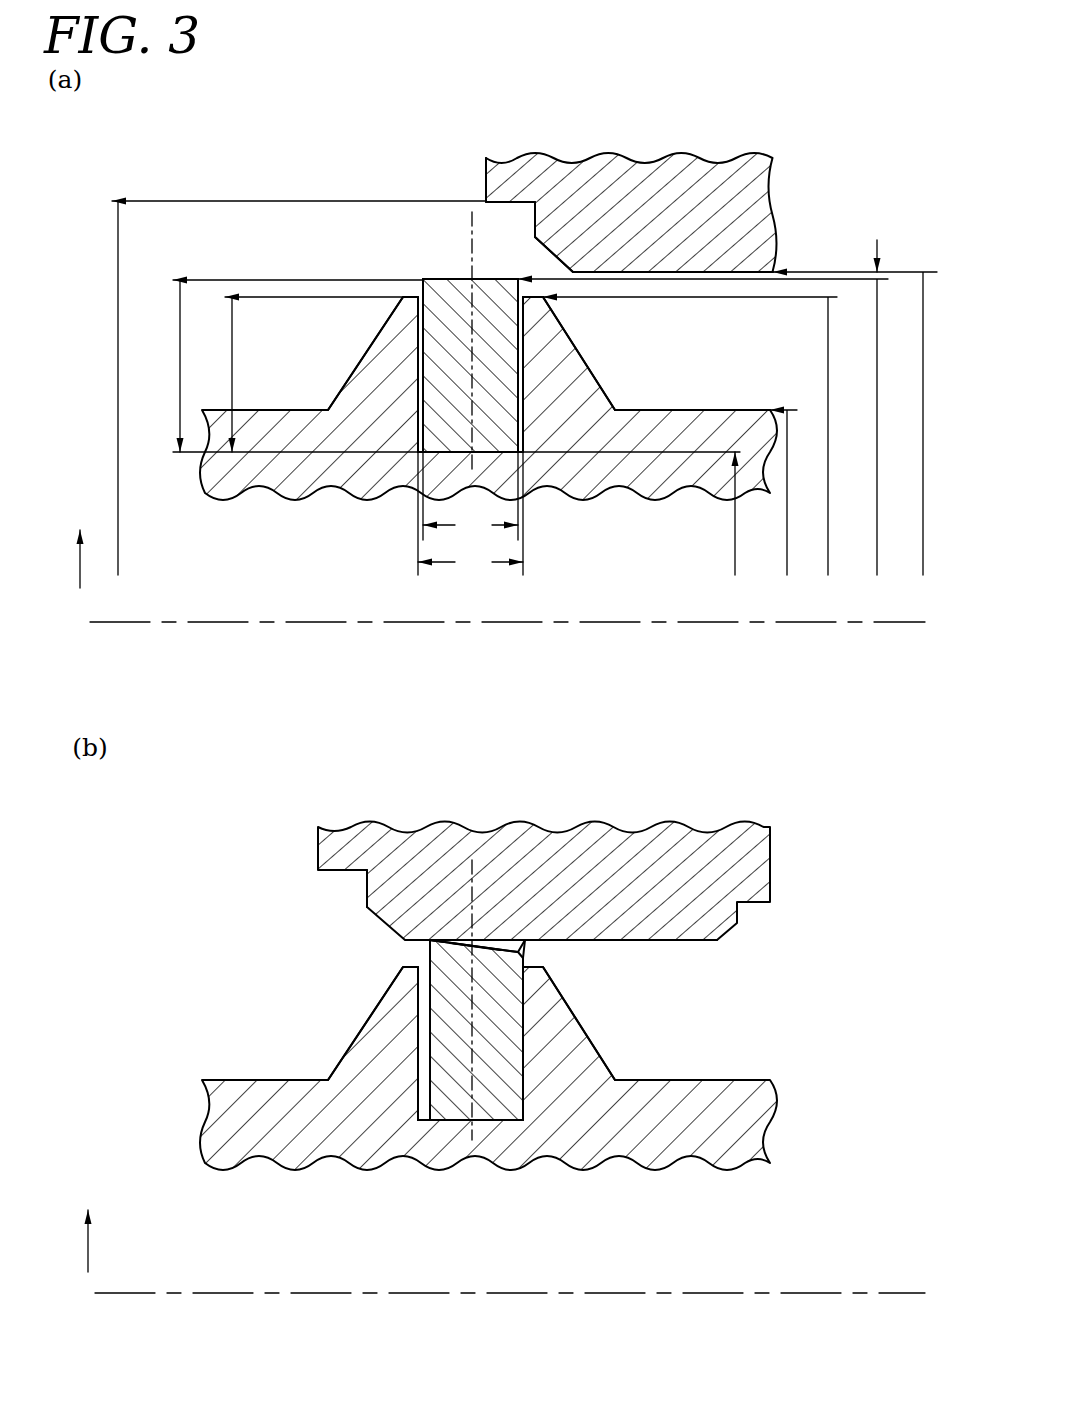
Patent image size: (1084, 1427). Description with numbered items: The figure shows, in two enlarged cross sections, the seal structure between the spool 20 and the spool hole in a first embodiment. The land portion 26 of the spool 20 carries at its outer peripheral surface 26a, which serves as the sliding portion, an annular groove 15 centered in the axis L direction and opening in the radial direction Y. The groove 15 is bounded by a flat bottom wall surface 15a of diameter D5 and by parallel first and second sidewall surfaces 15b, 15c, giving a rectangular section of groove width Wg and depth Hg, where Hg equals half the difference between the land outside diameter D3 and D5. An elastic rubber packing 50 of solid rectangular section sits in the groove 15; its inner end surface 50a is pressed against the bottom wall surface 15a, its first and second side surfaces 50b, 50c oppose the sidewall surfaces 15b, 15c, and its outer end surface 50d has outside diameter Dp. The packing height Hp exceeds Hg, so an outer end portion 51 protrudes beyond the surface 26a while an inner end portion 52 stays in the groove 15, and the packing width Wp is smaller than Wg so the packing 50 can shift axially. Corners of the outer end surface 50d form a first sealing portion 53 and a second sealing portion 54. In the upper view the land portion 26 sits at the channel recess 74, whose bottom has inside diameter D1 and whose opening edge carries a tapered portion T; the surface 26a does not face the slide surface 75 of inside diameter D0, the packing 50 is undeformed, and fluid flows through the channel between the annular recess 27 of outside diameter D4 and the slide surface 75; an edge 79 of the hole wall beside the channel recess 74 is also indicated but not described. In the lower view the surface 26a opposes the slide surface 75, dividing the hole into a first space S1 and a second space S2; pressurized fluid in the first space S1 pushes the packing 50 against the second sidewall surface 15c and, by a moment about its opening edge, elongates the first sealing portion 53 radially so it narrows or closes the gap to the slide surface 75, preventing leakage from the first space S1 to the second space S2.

The groove 15 is at (410, 322).
The bottom wall surface 15a is at (415, 453).
The first sidewall surface 15b is at (420, 376).
The second sidewall surface 15c is at (520, 332).
The spool 20 is at (297, 475).
The land portion 26 is at (560, 367).
The outer peripheral surface 26a is at (535, 285).
The annular recess 27 is at (770, 410).
The packing 50 is at (513, 278).
The inner end surface 50a is at (517, 456).
The first side surface 50b is at (418, 344).
The second side surface 50c is at (525, 396).
The outer end surface 50d is at (436, 277).
The outer end portion 51 is at (459, 278).
The inner end portion 52 is at (520, 465).
The first sealing portion 53 is at (420, 278).
The second sealing portion 54 is at (537, 236).
The channel recess 74 is at (522, 205).
The slide surface 75 is at (680, 275).
The tool side surface 79 is at (486, 175).
The tapered portion T is at (607, 270).
The inside diameter D1 is at (280, 388).
The outside diameter D3 is at (704, 436).
The outside diameter D4 is at (798, 492).
The diameter D5 is at (755, 513).
The outside diameter Dp is at (717, 427).
The inside diameter D0 is at (867, 423).
The height Hp is at (281, 366).
The depth Hg is at (296, 374).
The width Wp is at (470, 496).
The groove width Wg is at (470, 515).
The radial direction Y is at (85, 882).
The axis L is at (518, 961).
The first space S1 is at (165, 1002).
The second space S2 is at (805, 1002).